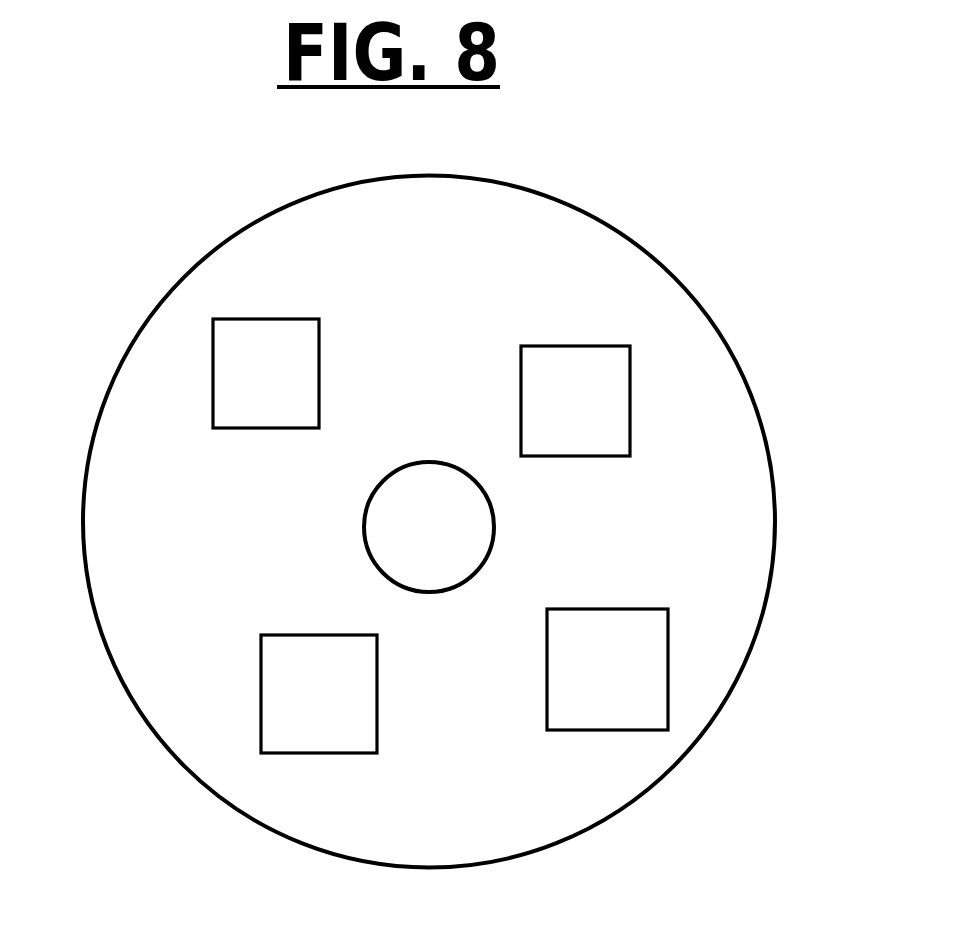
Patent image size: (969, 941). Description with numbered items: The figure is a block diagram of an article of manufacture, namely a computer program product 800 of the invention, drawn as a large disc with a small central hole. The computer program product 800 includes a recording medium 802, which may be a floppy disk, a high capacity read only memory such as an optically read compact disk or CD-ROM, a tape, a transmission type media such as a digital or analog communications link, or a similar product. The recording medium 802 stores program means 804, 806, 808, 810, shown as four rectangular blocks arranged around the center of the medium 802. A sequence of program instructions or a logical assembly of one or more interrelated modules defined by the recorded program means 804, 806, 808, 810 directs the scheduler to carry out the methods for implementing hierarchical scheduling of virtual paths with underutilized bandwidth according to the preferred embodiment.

The computer program product 800 is at (446, 522).
The recording medium 802 is at (136, 316).
The program means 804 is at (319, 694).
The program means 806 is at (607, 669).
The program means 808 is at (575, 401).
The program means 810 is at (266, 373).